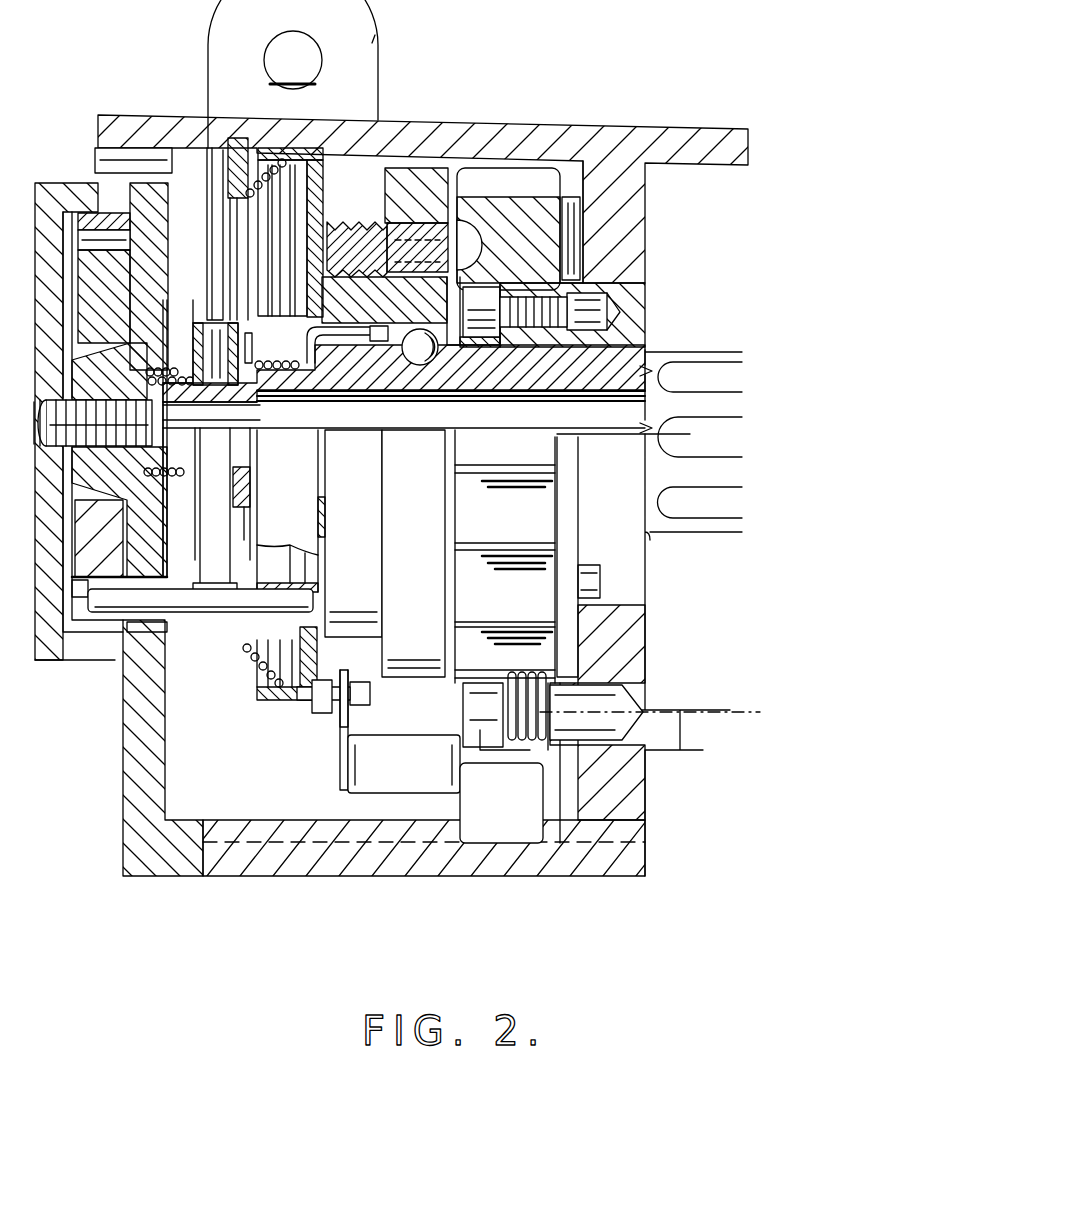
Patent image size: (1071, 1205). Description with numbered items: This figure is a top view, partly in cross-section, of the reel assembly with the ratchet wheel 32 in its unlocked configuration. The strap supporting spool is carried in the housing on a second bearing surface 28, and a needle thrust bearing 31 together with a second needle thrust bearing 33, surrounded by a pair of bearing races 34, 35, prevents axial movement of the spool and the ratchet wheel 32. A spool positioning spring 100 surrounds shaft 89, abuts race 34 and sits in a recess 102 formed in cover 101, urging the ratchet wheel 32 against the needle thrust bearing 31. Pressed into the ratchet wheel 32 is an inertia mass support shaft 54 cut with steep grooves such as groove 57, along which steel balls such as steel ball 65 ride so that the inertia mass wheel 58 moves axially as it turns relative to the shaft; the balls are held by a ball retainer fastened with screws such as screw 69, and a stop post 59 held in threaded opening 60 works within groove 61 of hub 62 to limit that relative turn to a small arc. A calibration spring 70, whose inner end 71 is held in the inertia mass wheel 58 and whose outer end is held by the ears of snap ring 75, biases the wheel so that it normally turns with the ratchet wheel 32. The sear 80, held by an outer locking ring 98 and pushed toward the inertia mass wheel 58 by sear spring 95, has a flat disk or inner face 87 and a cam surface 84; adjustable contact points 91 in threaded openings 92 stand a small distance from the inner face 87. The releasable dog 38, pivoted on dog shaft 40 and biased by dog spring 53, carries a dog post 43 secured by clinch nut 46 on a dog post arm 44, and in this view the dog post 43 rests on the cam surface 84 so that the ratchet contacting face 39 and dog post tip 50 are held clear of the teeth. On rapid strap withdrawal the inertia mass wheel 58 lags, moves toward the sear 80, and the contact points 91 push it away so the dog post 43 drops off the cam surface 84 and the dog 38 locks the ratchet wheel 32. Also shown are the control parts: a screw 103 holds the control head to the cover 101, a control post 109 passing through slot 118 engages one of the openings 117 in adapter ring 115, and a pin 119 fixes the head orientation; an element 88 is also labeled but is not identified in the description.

The second bearing surface 28 is at (627, 280).
The needle thrust bearing 31 is at (577, 233).
The ratchet wheel 32 is at (625, 318).
The second needle thrust bearing 33 is at (212, 530).
The bearing race 34 is at (193, 533).
The bearing race 35 is at (230, 533).
The releasable dog 38 is at (475, 802).
The ratchet contacting face 39 is at (480, 697).
The dog shaft 40 is at (595, 692).
The dog post 43 is at (318, 708).
The dog post arm 44 is at (370, 783).
The clinch nut 46 is at (358, 686).
The dog post tip 50 is at (315, 710).
The dog spring 53 is at (530, 747).
The inertia mass support shaft 54 is at (375, 372).
The groove 57 is at (390, 380).
The inertia mass wheel 58 is at (410, 170).
The inertia mass wheel stop post 59 is at (477, 293).
The threaded opening 60 is at (573, 300).
The groove 61 is at (507, 260).
The hub 62 is at (473, 345).
The steel ball 65 is at (420, 362).
The screw 69 is at (478, 228).
The calibration spring 70 is at (272, 352).
The inner end 71 is at (345, 345).
The snap ring 75 is at (245, 337).
The sear 80 is at (312, 207).
The cam surface 84 is at (308, 700).
The flat disk 87 is at (345, 150).
The plate 88 is at (265, 583).
The shaft 89 is at (180, 472).
The contact points 91 is at (347, 233).
The threaded openings 92 is at (457, 215).
The sear spring 95 is at (255, 150).
The outer locking ring 98 is at (200, 148).
The spool positioning spring 100 is at (178, 380).
The cover 101 is at (123, 777).
The recess 102 is at (65, 183).
The screw 103 is at (50, 394).
The control post 109 is at (212, 612).
The adapter ring 115 is at (112, 283).
The openings 117 is at (118, 250).
The slot 118 is at (143, 625).
The pin 119 is at (118, 160).